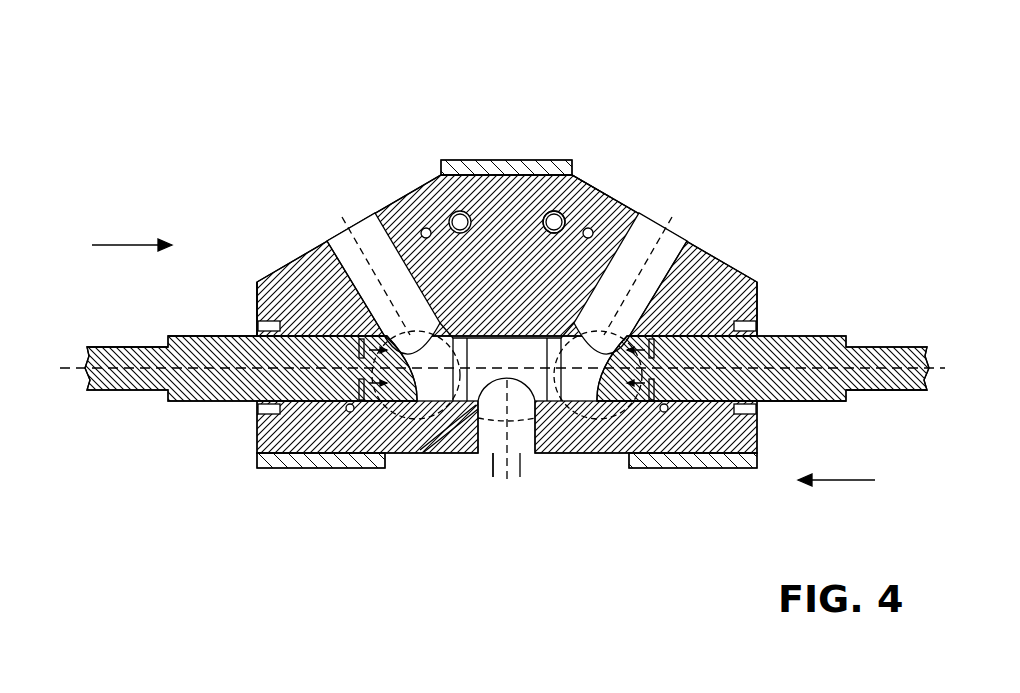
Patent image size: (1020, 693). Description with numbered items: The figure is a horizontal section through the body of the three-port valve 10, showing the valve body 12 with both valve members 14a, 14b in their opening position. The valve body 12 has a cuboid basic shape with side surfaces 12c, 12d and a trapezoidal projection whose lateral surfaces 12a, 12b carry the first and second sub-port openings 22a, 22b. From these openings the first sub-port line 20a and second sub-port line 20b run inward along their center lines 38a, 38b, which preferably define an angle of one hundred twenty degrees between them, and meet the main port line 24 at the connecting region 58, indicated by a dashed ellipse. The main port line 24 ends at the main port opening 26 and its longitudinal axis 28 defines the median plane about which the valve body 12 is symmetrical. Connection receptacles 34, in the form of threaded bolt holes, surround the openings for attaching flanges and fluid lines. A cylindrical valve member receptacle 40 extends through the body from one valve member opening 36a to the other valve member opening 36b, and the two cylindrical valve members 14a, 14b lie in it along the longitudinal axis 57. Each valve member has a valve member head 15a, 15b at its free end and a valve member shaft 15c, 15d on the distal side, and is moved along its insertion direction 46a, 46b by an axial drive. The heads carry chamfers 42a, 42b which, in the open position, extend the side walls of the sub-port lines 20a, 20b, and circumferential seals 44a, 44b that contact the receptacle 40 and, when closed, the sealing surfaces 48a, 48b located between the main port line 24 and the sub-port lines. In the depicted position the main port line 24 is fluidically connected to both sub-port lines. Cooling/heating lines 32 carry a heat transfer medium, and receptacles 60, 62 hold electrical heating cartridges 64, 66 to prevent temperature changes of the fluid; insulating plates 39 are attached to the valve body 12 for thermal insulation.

The 3-port valve 10 is at (145, 100).
The valve body 12 is at (608, 186).
The lateral surface 12a is at (298, 300).
The lateral surface 12b is at (581, 180).
The side surface 12c is at (258, 443).
The side surface 12d is at (762, 328).
The valve member 14a is at (195, 403).
The valve member 14b is at (826, 330).
The valve member head 15a is at (205, 335).
The valve member head 15b is at (773, 403).
The valve member shaft 15c is at (117, 347).
The valve member shaft 15d is at (890, 392).
The first sub-port line 20a is at (398, 247).
The second sub-port line 20b is at (708, 290).
The first sub-port opening 22a is at (340, 320).
The second sub-port opening 22b is at (685, 255).
The main port line 24 is at (422, 453).
The main port opening 26 is at (493, 455).
The longitudinal axis 28 is at (507, 407).
The cooling/heating line 32 is at (690, 455).
The connection receptacle 34 is at (258, 300).
The valve member opening 36a is at (262, 325).
The valve member opening 36b is at (752, 327).
The center line 38a is at (360, 255).
The center line 38b is at (662, 240).
The insulating plate 39 is at (457, 212).
The valve member receptacle 40 is at (580, 453).
The chamfer 42a is at (398, 453).
The chamfer 42b is at (612, 317).
The circumferential seal 44a is at (346, 412).
The circumferential seal 44b is at (664, 412).
The insertion direction 46a is at (132, 261).
The insertion direction 46b is at (836, 493).
The sealing surface 48a is at (406, 453).
The sealing surface 48b is at (548, 210).
The longitudinal axis 57 is at (66, 372).
The connecting region 58 is at (555, 453).
The receptacle 60 is at (467, 212).
The receptacle 62 is at (556, 210).
The electrical heating cartridge 64 is at (441, 175).
The electrical heating cartridge 66 is at (600, 175).